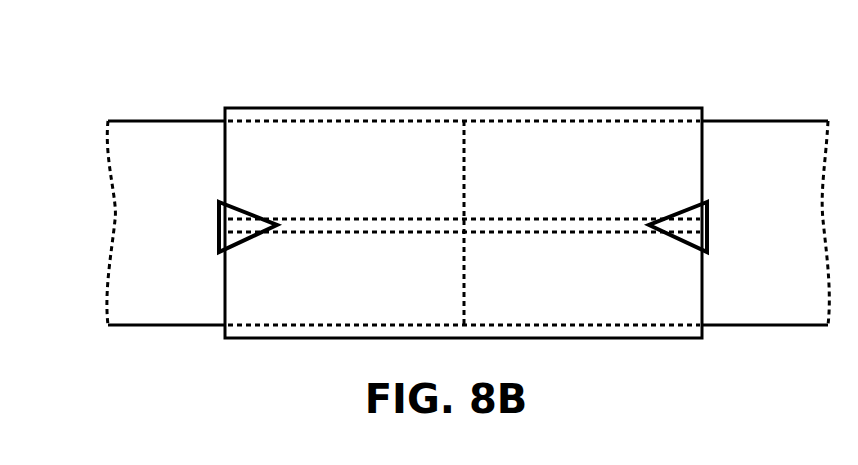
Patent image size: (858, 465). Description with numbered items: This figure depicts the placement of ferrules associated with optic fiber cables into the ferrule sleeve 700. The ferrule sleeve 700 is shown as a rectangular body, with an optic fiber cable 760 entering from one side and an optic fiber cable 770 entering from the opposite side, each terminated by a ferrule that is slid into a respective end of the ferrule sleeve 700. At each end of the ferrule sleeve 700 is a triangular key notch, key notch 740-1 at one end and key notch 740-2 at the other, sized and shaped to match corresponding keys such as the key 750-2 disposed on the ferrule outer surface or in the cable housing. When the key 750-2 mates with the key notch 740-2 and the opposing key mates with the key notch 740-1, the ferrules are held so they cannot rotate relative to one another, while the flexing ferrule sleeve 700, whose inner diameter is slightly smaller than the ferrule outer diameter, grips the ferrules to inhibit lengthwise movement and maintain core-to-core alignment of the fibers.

The ferrule sleeve 700 is at (456, 88).
The optic fiber cable 760 is at (172, 100).
The optic fiber cable 770 is at (765, 100).
The key notch 740-1 is at (253, 243).
The key notch 740-2 is at (674, 243).
The key 750-2 is at (217, 227).